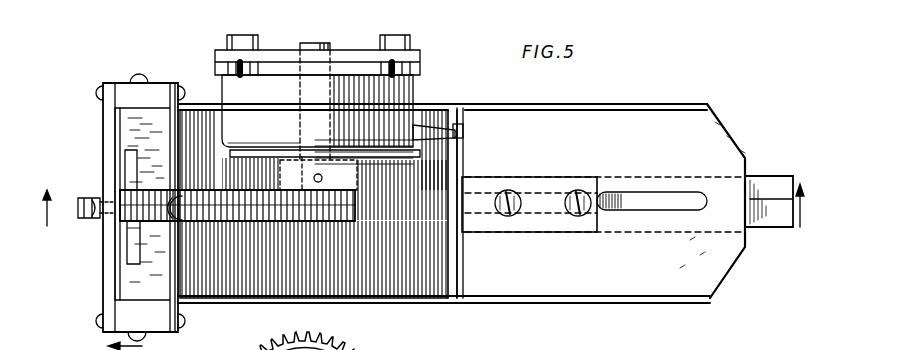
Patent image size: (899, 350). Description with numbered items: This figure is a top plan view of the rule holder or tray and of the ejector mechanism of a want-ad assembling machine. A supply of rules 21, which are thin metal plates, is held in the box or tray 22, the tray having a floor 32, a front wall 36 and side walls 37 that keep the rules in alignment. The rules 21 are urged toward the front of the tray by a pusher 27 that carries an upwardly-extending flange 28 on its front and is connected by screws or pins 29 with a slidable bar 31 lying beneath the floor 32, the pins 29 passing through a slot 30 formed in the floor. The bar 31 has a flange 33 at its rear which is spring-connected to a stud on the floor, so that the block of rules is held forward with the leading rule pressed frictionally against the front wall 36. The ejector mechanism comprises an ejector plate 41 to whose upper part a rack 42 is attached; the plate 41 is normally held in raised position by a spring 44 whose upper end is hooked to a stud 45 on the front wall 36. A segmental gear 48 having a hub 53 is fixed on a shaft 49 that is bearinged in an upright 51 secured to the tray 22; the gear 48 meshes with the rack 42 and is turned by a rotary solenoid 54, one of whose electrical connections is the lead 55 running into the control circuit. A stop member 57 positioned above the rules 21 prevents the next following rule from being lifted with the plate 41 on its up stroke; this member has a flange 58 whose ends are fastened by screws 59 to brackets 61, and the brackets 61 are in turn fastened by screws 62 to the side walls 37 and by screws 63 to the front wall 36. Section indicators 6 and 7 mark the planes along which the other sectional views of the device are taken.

The section line 6- 6 is at (412, 216).
The section line 7-7 / gear 7 is at (231, 341).
The rules 21 is at (428, 288).
The tray 22 is at (362, 310).
The pusher 27 is at (542, 186).
The flange 28 is at (463, 160).
The screws or pins 29 is at (572, 216).
The slot 30 is at (648, 210).
The slidable bar 31 is at (770, 226).
The floor 32 is at (712, 136).
The flange 33 is at (788, 226).
The front wall 36 is at (115, 289).
The side walls 37 is at (533, 110).
The ejector plate 41 is at (115, 145).
The rack 42 is at (122, 192).
The spring 44 is at (80, 218).
The stud 45 is at (98, 220).
The segmental gear 48 is at (165, 220).
The shaft 49 is at (335, 75).
The upright 51 is at (272, 55).
The hub 53 is at (268, 165).
The rotary solenoid 54 is at (395, 95).
The lead 55 is at (460, 130).
The stop member 57 is at (143, 165).
The flange 58 is at (170, 128).
The screws 59 is at (182, 88).
The brackets 61 is at (160, 90).
The screws 62 is at (139, 78).
The screws 63 is at (98, 92).